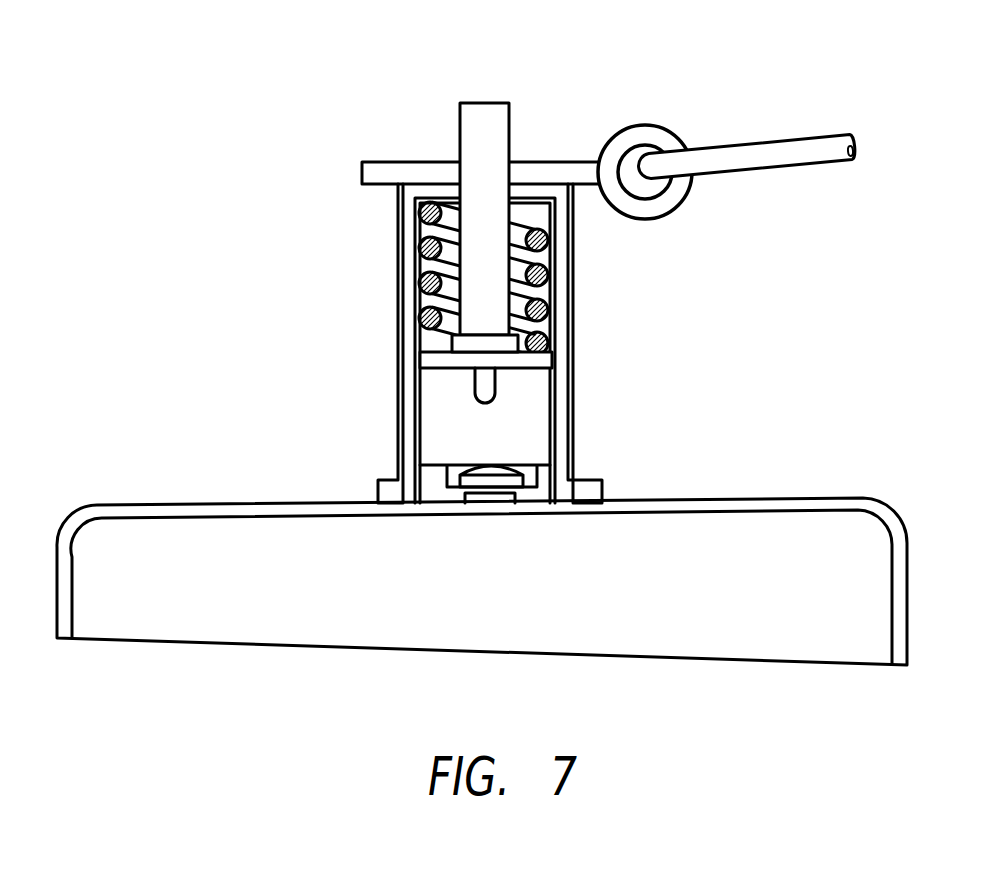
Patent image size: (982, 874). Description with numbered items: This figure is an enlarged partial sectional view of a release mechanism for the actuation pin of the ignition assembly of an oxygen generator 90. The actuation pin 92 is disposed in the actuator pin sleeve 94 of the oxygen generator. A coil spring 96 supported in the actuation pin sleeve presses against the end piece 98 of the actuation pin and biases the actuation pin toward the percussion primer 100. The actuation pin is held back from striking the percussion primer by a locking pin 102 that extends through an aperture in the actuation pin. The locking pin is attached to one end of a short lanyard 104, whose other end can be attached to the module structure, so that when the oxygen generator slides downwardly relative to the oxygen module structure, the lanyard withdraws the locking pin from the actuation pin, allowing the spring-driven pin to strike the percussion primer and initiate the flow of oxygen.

The oxygen generator 90 is at (770, 547).
The actuation pin 92 is at (469, 133).
The actuator pin sleeve 94 is at (575, 419).
The coil spring 96 is at (553, 275).
The end piece 98 is at (450, 371).
The percussion primer 100 is at (497, 466).
The locking pin 102 is at (360, 173).
The lanyard 104 is at (820, 165).